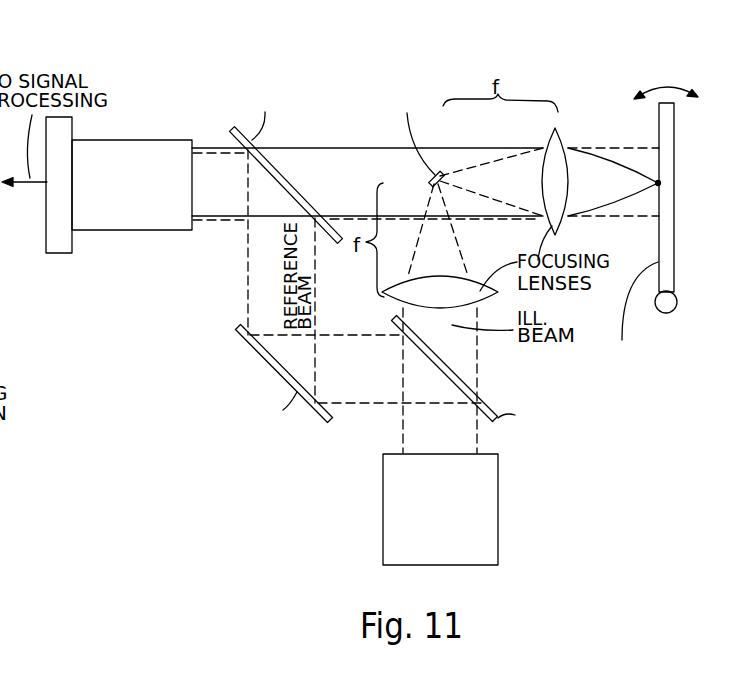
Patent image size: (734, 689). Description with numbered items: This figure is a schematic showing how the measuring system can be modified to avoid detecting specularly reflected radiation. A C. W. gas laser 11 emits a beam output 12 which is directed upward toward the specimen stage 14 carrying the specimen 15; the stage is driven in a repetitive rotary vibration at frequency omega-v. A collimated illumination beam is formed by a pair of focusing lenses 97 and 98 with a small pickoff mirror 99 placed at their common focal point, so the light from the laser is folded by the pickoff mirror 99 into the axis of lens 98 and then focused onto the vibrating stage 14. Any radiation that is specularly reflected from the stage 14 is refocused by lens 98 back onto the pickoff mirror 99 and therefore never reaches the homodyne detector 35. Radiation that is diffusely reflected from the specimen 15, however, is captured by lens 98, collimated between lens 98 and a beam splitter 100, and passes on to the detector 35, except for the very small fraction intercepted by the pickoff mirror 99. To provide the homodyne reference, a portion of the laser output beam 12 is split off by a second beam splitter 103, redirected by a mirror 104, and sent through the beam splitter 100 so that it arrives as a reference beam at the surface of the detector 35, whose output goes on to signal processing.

The C. W. gas laser 11 is at (478, 537).
The beam output 12 is at (447, 440).
The specimen stage 14 is at (667, 248).
The specimen 15 is at (663, 185).
The homodyne detector 35 is at (110, 220).
The focusing lens 97 is at (450, 302).
The focusing lens 98 is at (548, 177).
The pickoff mirror 99 is at (432, 178).
The beam splitter 100 is at (233, 131).
The second beam splitter 103 is at (485, 398).
The mirror 104 is at (258, 353).